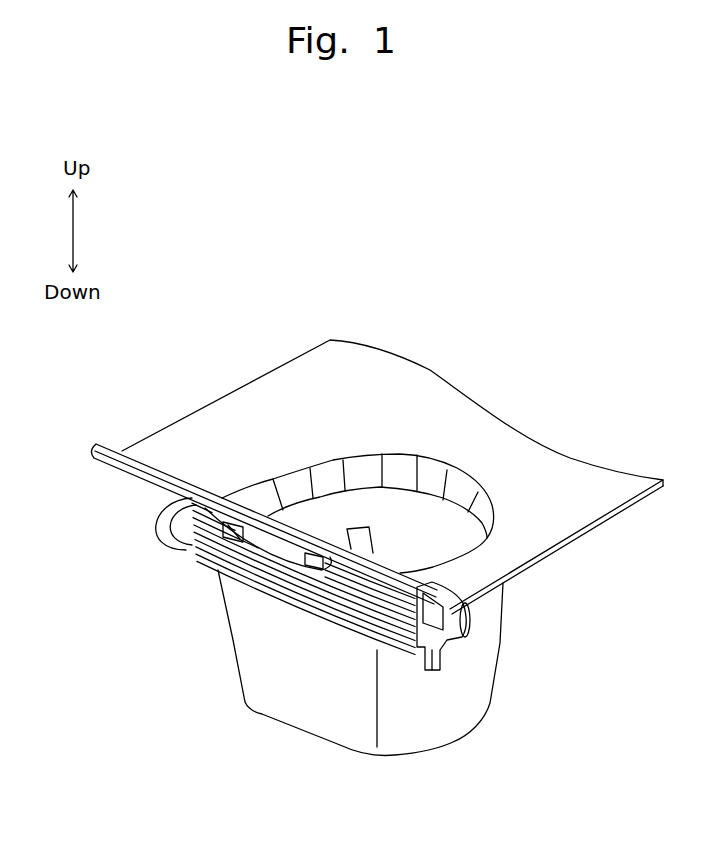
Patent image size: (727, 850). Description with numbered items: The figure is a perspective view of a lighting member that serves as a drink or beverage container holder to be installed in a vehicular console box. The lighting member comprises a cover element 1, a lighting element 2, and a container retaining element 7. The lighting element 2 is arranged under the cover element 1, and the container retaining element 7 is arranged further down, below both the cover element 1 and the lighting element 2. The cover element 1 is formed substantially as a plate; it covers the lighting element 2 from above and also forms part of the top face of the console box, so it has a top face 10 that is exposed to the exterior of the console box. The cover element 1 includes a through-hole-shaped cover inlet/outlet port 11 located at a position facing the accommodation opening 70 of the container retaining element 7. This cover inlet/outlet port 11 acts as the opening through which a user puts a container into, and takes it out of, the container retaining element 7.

The cover element 1 is at (319, 366).
The top face 10 is at (195, 432).
The cover inlet/outlet port 11 is at (411, 464).
The lighting element 2 is at (218, 570).
The accommodation opening 70 is at (403, 555).
The container retaining element 7 is at (430, 728).